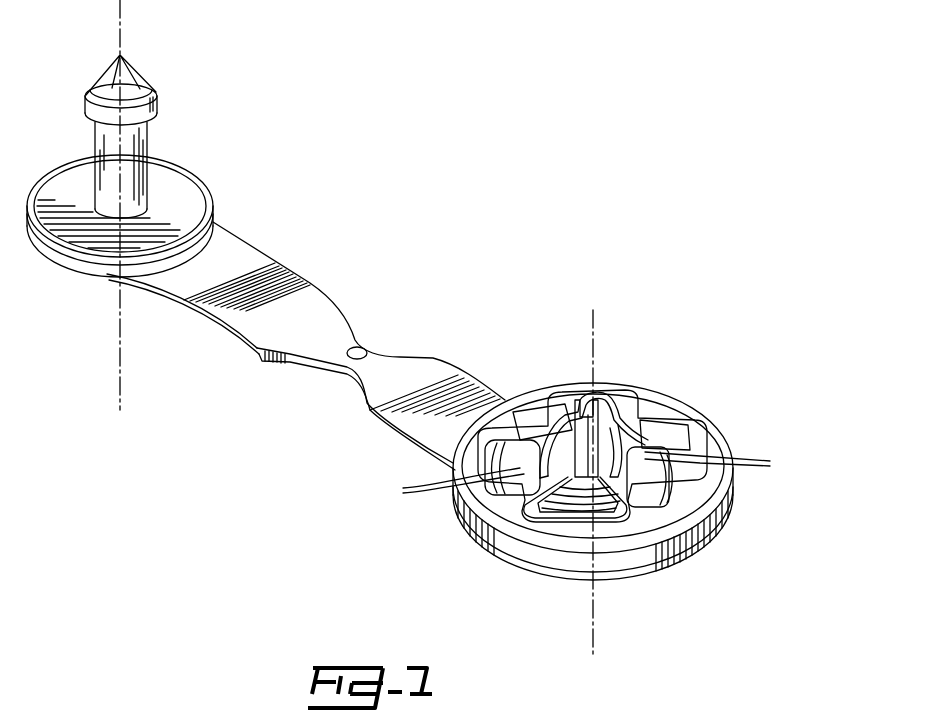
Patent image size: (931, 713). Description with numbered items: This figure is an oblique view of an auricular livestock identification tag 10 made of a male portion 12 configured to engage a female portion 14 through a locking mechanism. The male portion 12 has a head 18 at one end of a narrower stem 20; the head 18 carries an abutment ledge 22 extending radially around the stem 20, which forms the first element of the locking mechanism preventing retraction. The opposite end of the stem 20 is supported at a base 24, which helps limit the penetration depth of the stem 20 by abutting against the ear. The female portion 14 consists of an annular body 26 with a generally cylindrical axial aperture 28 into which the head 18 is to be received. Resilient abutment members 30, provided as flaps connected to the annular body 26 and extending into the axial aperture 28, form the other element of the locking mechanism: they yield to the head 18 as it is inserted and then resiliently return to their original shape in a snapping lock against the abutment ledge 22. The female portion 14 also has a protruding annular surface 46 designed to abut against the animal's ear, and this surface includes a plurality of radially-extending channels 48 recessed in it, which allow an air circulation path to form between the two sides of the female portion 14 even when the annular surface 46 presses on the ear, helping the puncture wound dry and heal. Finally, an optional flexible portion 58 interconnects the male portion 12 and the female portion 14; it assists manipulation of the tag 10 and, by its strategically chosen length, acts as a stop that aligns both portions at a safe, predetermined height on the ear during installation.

The auricular livestock identification tag 10 is at (481, 156).
The male portion 12 is at (272, 126).
The female portion 14 is at (759, 419).
The head 18 is at (94, 86).
The stem 20 is at (110, 143).
The abutment ledge 22 is at (146, 124).
The base 24 is at (62, 186).
The annular body 26 is at (708, 433).
The axial aperture 28 is at (577, 445).
The resilient abutment members 30 is at (587, 474).
The protruding annular surface 46 is at (558, 410).
The radially-extending channels 48 is at (530, 440).
The flexible portion 58 is at (320, 312).